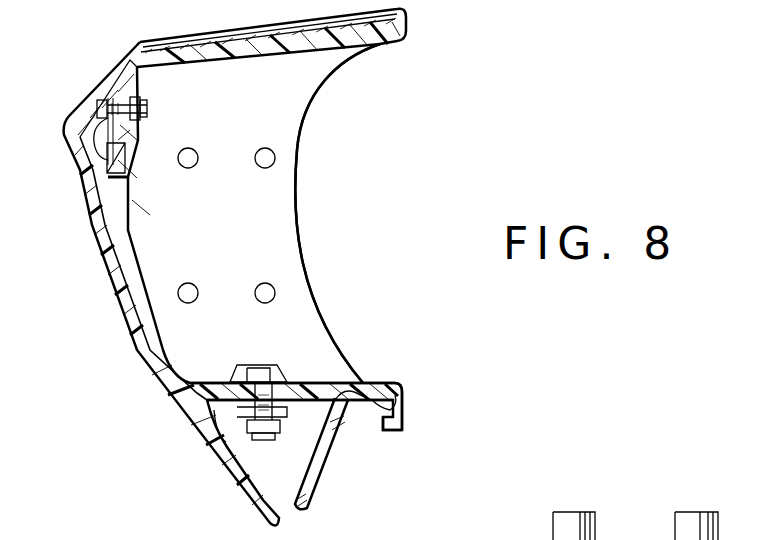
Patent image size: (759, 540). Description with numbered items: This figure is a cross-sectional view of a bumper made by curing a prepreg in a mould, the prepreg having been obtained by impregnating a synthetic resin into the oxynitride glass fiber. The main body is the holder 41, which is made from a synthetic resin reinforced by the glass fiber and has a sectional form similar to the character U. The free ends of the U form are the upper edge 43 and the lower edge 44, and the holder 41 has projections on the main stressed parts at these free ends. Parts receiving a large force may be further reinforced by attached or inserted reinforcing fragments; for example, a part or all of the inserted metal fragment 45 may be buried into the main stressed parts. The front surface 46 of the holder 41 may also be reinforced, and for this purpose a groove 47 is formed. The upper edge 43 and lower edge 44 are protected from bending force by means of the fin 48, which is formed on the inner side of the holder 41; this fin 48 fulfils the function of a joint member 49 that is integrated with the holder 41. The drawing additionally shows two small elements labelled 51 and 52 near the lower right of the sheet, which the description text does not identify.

The holder 41 is at (130, 188).
The upper edge 43 is at (385, 32).
The lower edge 44 is at (406, 432).
The inserted metal fragment 45 is at (380, 385).
The front surface 46 is at (93, 218).
The groove 47 is at (140, 150).
The fin 48 is at (292, 108).
The joint member 49 is at (300, 196).
The block 51 is at (560, 512).
The block 52 is at (689, 512).